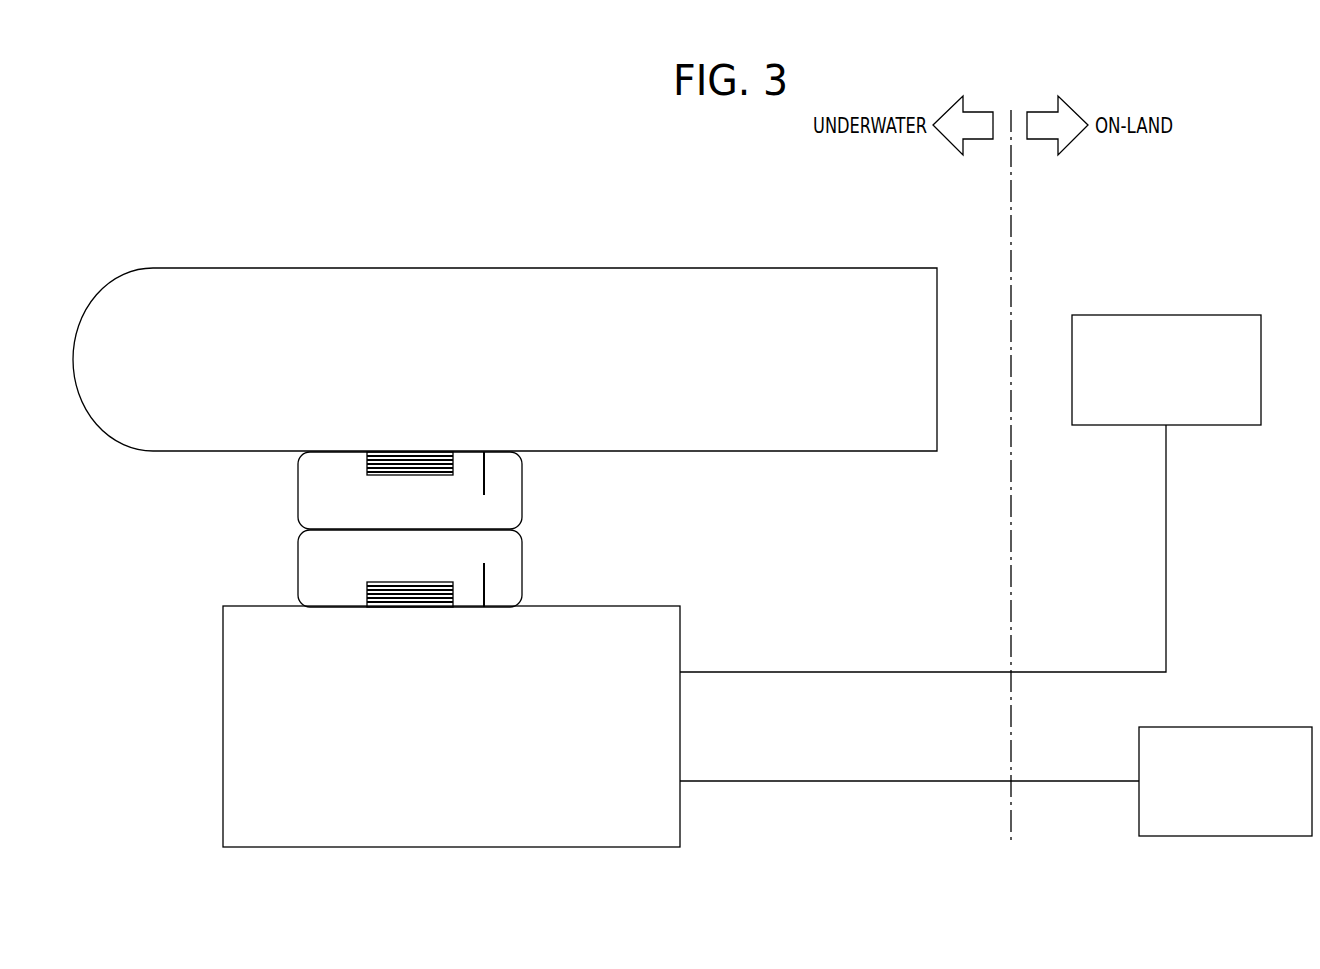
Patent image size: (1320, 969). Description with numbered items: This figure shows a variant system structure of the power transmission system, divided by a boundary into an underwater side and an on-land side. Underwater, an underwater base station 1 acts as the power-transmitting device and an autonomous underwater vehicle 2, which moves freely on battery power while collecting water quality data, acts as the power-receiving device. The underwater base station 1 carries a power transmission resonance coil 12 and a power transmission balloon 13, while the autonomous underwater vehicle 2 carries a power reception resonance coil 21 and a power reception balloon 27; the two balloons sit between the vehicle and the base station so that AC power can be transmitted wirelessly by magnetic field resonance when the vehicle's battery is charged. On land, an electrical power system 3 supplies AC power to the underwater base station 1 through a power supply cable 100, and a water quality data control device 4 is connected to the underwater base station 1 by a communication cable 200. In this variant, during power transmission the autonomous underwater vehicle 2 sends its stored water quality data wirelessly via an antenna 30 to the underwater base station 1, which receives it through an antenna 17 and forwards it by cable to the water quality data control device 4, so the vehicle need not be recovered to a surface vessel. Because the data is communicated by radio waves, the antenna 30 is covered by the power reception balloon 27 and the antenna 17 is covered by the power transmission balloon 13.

The underwater base station 1 is at (223, 762).
The autonomous underwater vehicle 2 is at (408, 268).
The electrical power system 3 is at (1222, 315).
The water quality data control device 4 is at (1270, 727).
The power transmission resonance coil 12 is at (408, 608).
The power transmission balloon 13 is at (298, 568).
The antenna 17 is at (487, 585).
The power reception resonance coil 21 is at (408, 462).
The power reception balloon 27 is at (298, 493).
The antenna 30 is at (487, 474).
The power supply cable 100 is at (1166, 590).
The communication cable 200 is at (1077, 781).